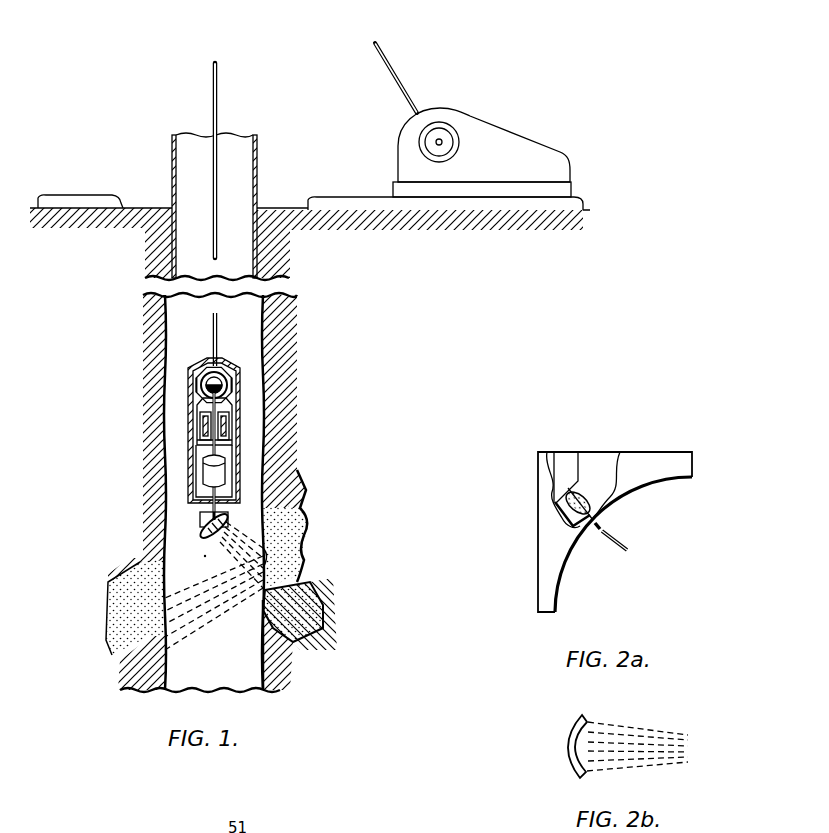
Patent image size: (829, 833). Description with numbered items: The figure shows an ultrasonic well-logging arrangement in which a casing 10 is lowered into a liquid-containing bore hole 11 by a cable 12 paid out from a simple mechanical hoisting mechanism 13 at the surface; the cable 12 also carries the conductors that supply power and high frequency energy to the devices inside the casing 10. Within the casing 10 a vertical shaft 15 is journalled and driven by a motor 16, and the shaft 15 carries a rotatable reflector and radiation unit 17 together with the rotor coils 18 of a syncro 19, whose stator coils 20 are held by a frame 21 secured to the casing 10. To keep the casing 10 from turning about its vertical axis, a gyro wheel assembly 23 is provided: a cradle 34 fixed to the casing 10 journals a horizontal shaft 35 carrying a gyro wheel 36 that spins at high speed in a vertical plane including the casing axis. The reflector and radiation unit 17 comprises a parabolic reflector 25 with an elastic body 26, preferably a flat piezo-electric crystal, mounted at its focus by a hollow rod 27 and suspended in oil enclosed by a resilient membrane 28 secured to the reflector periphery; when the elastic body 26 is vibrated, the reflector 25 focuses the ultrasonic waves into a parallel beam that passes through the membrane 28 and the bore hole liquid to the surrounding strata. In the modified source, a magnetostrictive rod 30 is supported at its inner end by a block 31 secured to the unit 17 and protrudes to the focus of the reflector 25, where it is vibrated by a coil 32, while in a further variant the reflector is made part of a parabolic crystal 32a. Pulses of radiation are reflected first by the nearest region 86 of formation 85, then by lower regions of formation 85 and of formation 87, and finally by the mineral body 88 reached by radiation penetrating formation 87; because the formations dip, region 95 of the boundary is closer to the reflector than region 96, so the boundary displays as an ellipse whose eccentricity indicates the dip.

In FIG. 1, the casing 10 is at (210, 428).
In FIG. 1, the bore hole 11 is at (165, 516).
In FIG. 1, the cable 12 is at (390, 74).
In FIG. 1, the hoisting mechanism 13 is at (490, 117).
In FIG. 1, the vertical shaft 15 is at (233, 453).
In FIG. 1, the motor 16 is at (205, 476).
In FIG. 1, the reflector and radiation unit 17 is at (230, 514).
In FIG. 2A, the reflector and radiation unit 17 is at (537, 534).
In FIG. 1, the rotor coils 18 is at (229, 427).
In FIG. 1, the syncro 19 is at (200, 427).
In FIG. 1, the stator coils 20 is at (196, 441).
In FIG. 1, the frame 21 is at (229, 412).
In FIG. 1, the gyro wheel assembly 23 is at (201, 370).
In FIG. 1, the parabolic reflector 25 is at (205, 540).
In FIG. 2A, the parabolic reflector 25 is at (645, 494).
In FIG. 1, the elastic body 26 is at (231, 521).
In FIG. 1, the hollow rod 27 is at (210, 527).
In FIG. 1, the resilient membrane 28 is at (198, 561).
In FIG. 2A, the rod 30 is at (622, 542).
In FIG. 2A, the block 31 is at (568, 460).
In FIG. 2A, the coil 32 is at (585, 495).
In FIG. 2B, the crystal 32a is at (571, 750).
In FIG. 1, the cradle 34 is at (227, 381).
In FIG. 1, the horizontal shaft 35 is at (202, 382).
In FIG. 1, the gyro wheel 36 is at (223, 372).
In FIG. 1, the formation 85 is at (305, 549).
In FIG. 1, the region 86 is at (264, 550).
In FIG. 1, the formation 87 is at (265, 644).
In FIG. 1, the mineral body 88 is at (322, 617).
In FIG. 1, the region 95 is at (262, 586).
In FIG. 1, the region 96 is at (166, 610).